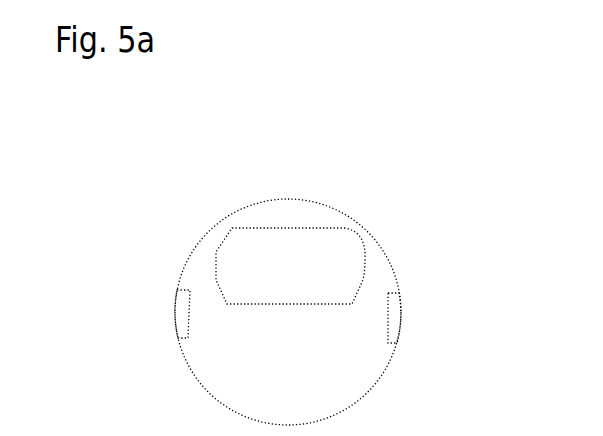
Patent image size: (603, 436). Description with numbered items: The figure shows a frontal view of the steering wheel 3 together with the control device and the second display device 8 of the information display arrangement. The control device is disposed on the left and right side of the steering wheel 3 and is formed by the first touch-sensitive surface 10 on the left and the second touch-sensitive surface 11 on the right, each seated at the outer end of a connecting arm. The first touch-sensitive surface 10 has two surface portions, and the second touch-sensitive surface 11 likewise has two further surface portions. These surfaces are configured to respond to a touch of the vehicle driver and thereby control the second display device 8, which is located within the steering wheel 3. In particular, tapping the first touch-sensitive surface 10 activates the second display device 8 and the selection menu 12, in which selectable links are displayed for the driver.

The steering wheel 3 is at (203, 201).
The second display device 8 is at (285, 263).
The first touch-sensitive surface 10 is at (177, 322).
The second touch-sensitive surface 11 is at (390, 317).
The selection menu 12 is at (420, 435).